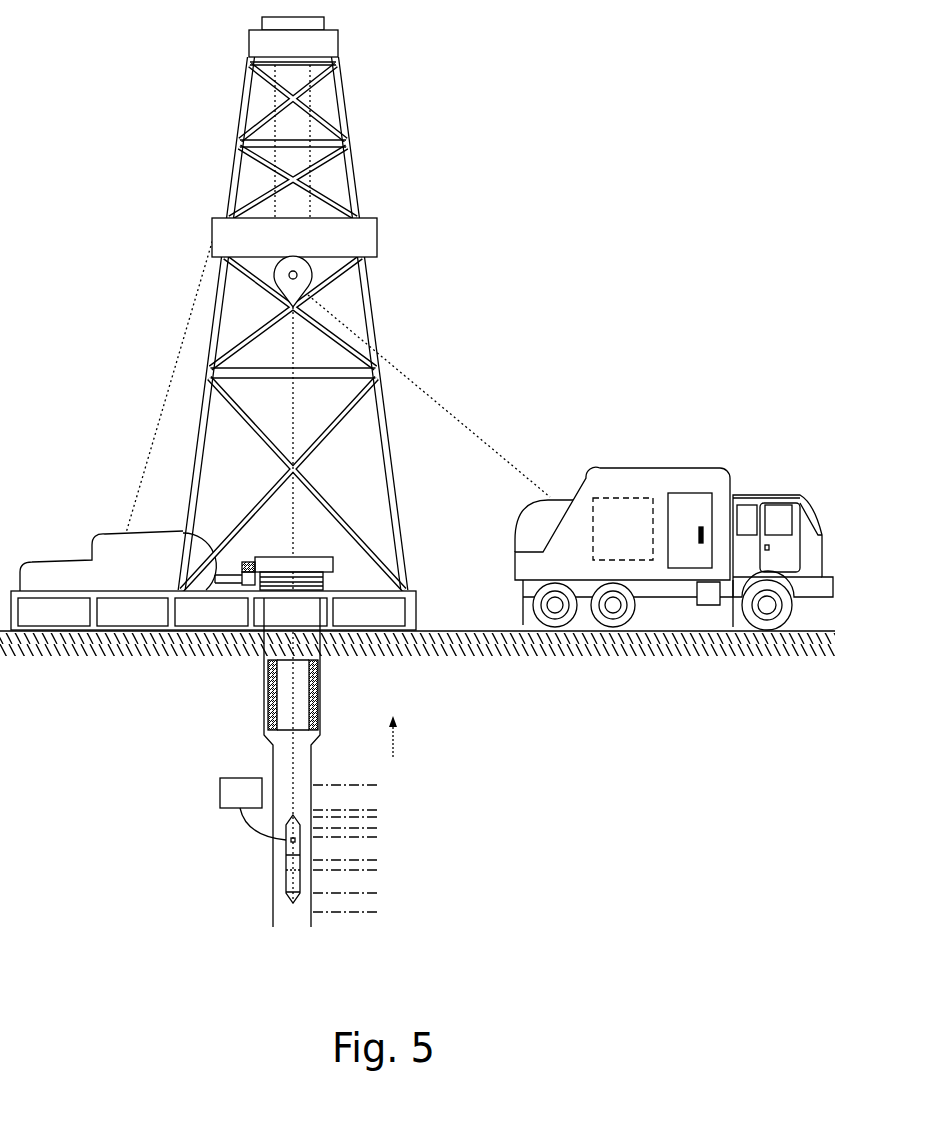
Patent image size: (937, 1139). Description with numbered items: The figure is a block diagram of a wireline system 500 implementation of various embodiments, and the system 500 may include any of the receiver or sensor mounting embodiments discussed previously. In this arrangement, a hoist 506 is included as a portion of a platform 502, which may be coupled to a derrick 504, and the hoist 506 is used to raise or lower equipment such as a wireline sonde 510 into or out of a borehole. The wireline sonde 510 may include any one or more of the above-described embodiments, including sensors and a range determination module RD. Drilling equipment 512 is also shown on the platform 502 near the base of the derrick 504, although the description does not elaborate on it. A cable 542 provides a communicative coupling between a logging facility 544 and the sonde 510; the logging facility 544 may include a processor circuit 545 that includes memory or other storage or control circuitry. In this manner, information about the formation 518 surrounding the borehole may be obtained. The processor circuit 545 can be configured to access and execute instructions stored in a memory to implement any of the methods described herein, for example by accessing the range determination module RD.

The wireline system 500 is at (417, 472).
The platform 502 is at (417, 608).
The derrick 504 is at (405, 557).
The hoist 506 is at (312, 268).
The wireline sonde 510 is at (285, 850).
The drawworks 512 is at (315, 557).
The formation 518 is at (383, 785).
The cable 542 is at (433, 405).
The logging facility 544 is at (683, 493).
The processor circuit 545 is at (612, 498).